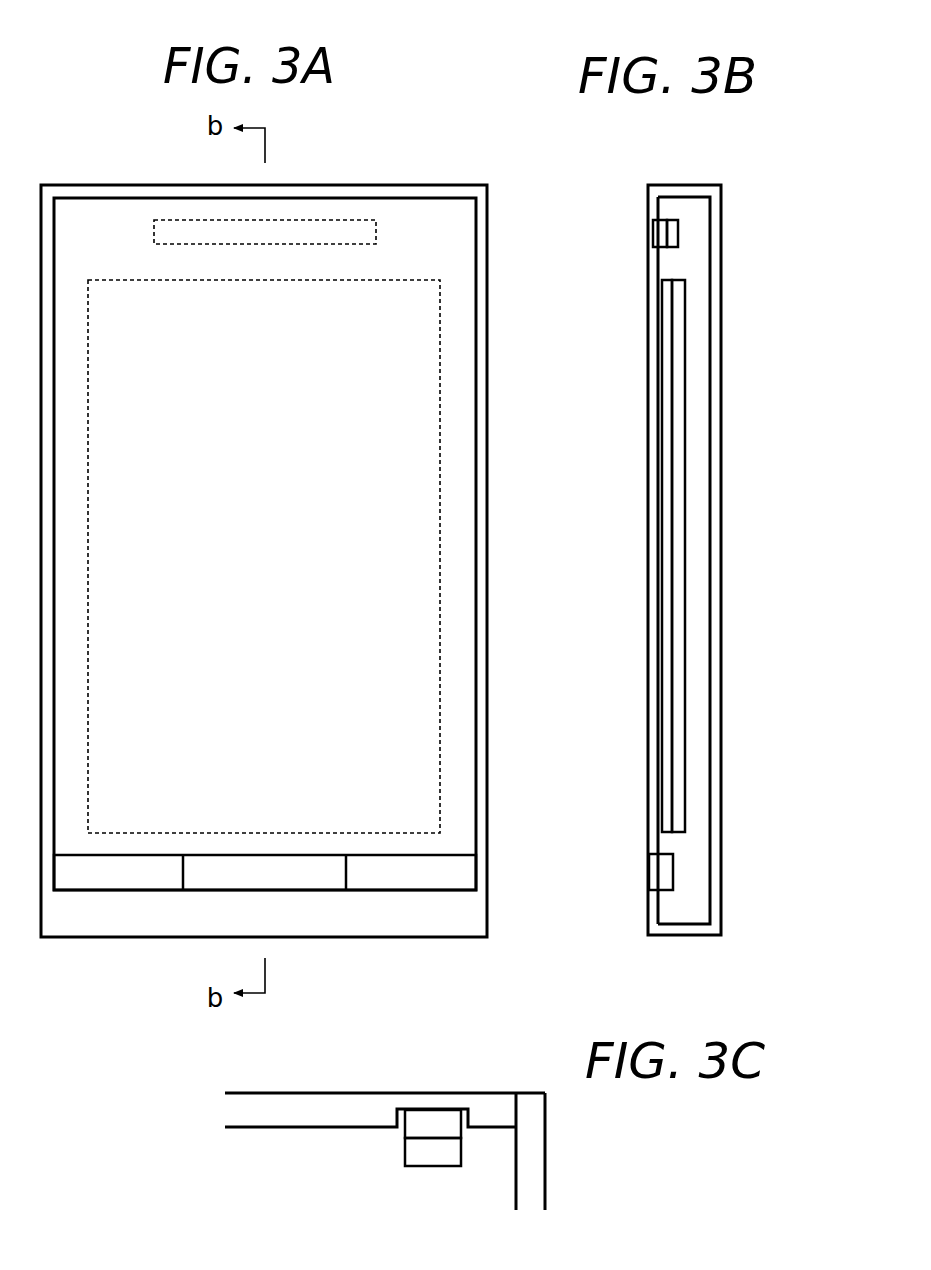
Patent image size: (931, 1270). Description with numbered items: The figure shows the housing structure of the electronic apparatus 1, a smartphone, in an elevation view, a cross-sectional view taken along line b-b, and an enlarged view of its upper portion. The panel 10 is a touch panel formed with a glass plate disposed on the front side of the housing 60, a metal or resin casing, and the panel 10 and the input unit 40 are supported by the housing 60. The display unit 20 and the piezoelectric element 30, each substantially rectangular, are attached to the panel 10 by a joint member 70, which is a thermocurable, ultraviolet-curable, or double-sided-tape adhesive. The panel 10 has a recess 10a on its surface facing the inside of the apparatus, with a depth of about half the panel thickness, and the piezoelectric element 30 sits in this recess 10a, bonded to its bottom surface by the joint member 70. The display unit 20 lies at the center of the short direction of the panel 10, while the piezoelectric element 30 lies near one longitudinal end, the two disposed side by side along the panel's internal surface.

In FIG. 3A, the electronic apparatus 1 is at (112, 166).
In FIG. 3A, the panel 10 is at (392, 197).
In FIG. 3B, the panel 10 is at (652, 257).
In FIG. 3C, the panel 10 is at (304, 1107).
In FIG. 3C, the recess 10a is at (466, 1106).
In FIG. 3A, the display unit 20 is at (393, 280).
In FIG. 3B, the display unit 20 is at (681, 386).
In FIG. 3A, the piezoelectric element 30 is at (153, 230).
In FIG. 3B, the piezoelectric element 30 is at (675, 221).
In FIG. 3C, the piezoelectric element 30 is at (433, 1152).
In FIG. 3A, the input unit 40 is at (70, 880).
In FIG. 3B, the input unit 40 is at (658, 874).
In FIG. 3A, the housing 60 is at (304, 184).
In FIG. 3B, the housing 60 is at (718, 240).
In FIG. 3C, the housing 60 is at (533, 1153).
In FIG. 3B, the joint member 70 is at (657, 232).
In FIG. 3C, the joint member 70 is at (428, 1120).